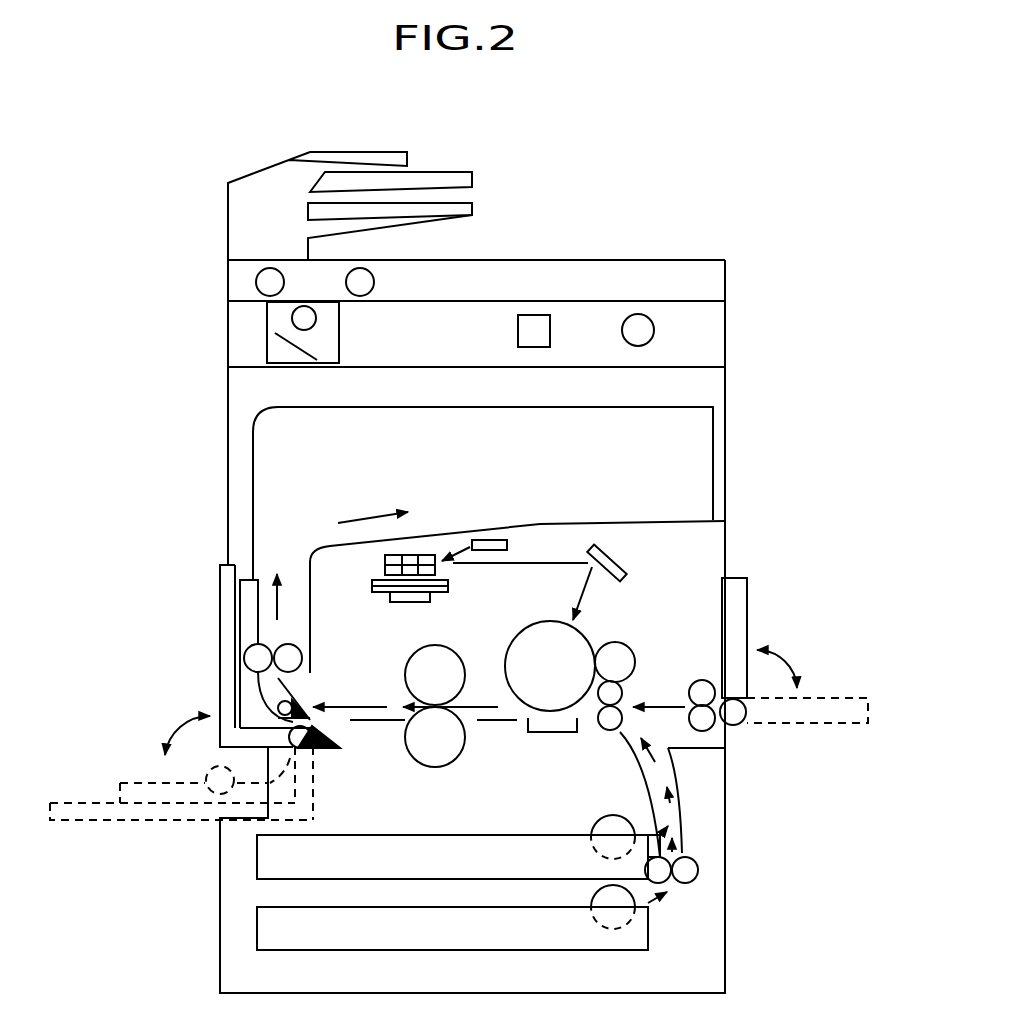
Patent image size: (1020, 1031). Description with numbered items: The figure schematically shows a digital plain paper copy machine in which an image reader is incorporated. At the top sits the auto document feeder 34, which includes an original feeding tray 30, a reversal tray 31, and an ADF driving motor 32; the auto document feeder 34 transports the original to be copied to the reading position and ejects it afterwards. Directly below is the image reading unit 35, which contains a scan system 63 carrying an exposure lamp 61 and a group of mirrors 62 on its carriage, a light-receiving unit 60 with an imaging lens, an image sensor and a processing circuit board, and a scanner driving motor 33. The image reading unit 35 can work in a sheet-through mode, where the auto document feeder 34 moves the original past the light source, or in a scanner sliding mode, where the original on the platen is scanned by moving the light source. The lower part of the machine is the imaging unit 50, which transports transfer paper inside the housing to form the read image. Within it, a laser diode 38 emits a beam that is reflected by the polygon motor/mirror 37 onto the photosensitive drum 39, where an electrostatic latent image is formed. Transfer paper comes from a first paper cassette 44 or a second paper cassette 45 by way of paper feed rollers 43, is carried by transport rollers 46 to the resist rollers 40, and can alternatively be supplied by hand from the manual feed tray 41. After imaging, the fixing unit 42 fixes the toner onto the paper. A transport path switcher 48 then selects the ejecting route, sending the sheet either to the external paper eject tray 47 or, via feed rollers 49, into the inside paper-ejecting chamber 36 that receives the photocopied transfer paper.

The original feeding tray 30 is at (472, 174).
The reversal tray 31 is at (472, 207).
The ADF driving motor 32 is at (345, 282).
The scanner driving motor 33 is at (638, 314).
The auto document feeder 34 is at (725, 278).
The image reading unit 35 is at (725, 330).
The inside paper-ejecting chamber 36 is at (700, 445).
The polygon motor/mirror 37 is at (430, 598).
The laser diode 38 is at (500, 540).
The photosensitive drum 39 is at (585, 637).
The resist rollers 40 is at (640, 673).
The manual feed tray 41 is at (747, 605).
The fixing unit 42 is at (443, 768).
The paper feed rollers 43 is at (597, 818).
The first paper cassette 44 is at (257, 853).
The second paper cassette 45 is at (257, 928).
The transport rollers 46 is at (700, 868).
The paper eject tray 47 is at (220, 645).
The transport path switcher 48 is at (307, 703).
The feed rollers 49 is at (312, 655).
The imaging unit 50 is at (725, 545).
The light-receiving unit 60 is at (532, 315).
The exposure lamp 61 is at (292, 318).
The group of mirrors 62 is at (267, 353).
The scan system 63 is at (340, 330).